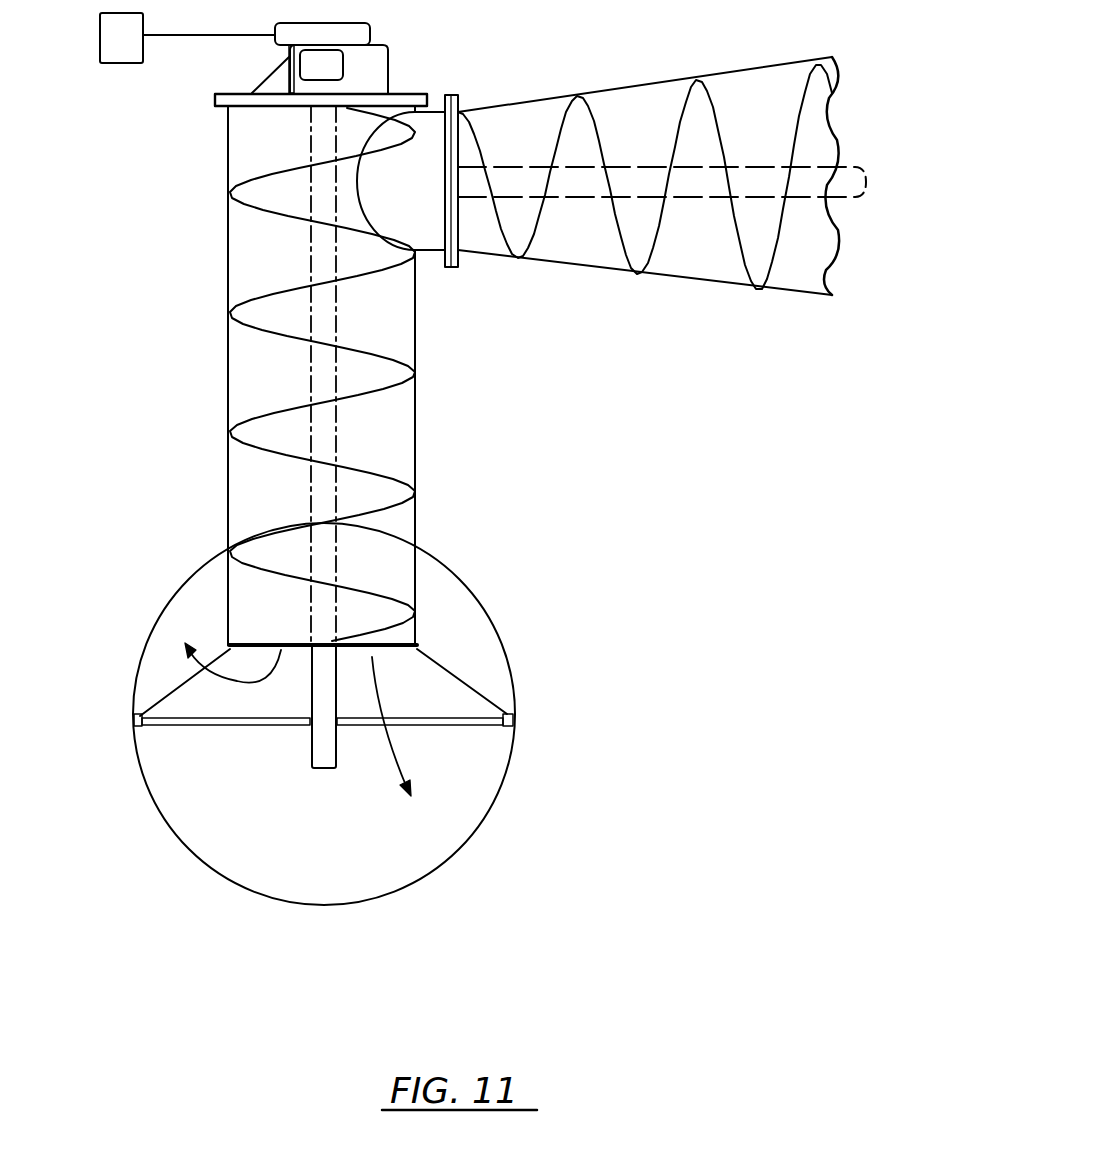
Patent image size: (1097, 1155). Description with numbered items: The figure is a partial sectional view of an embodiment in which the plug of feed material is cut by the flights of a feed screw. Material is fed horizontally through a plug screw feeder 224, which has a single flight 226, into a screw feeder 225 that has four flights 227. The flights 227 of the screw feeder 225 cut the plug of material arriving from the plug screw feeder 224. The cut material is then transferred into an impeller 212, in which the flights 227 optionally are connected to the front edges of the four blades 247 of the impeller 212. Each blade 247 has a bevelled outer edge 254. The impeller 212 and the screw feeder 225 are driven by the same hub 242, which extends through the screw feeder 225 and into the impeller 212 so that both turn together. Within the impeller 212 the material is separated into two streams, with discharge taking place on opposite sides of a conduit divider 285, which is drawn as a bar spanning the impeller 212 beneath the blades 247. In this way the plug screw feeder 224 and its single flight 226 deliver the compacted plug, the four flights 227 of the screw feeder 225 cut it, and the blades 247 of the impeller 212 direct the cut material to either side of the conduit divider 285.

The plug screw feeder 224 is at (638, 86).
The single flight 226 is at (622, 240).
The screw feeder 225 is at (416, 528).
The flights 227 is at (273, 338).
The hub 242 is at (340, 423).
The impeller 212 is at (467, 702).
The bevelled outer edge 254 is at (455, 675).
The blades 247 is at (183, 701).
The conduit divider 285 is at (135, 720).